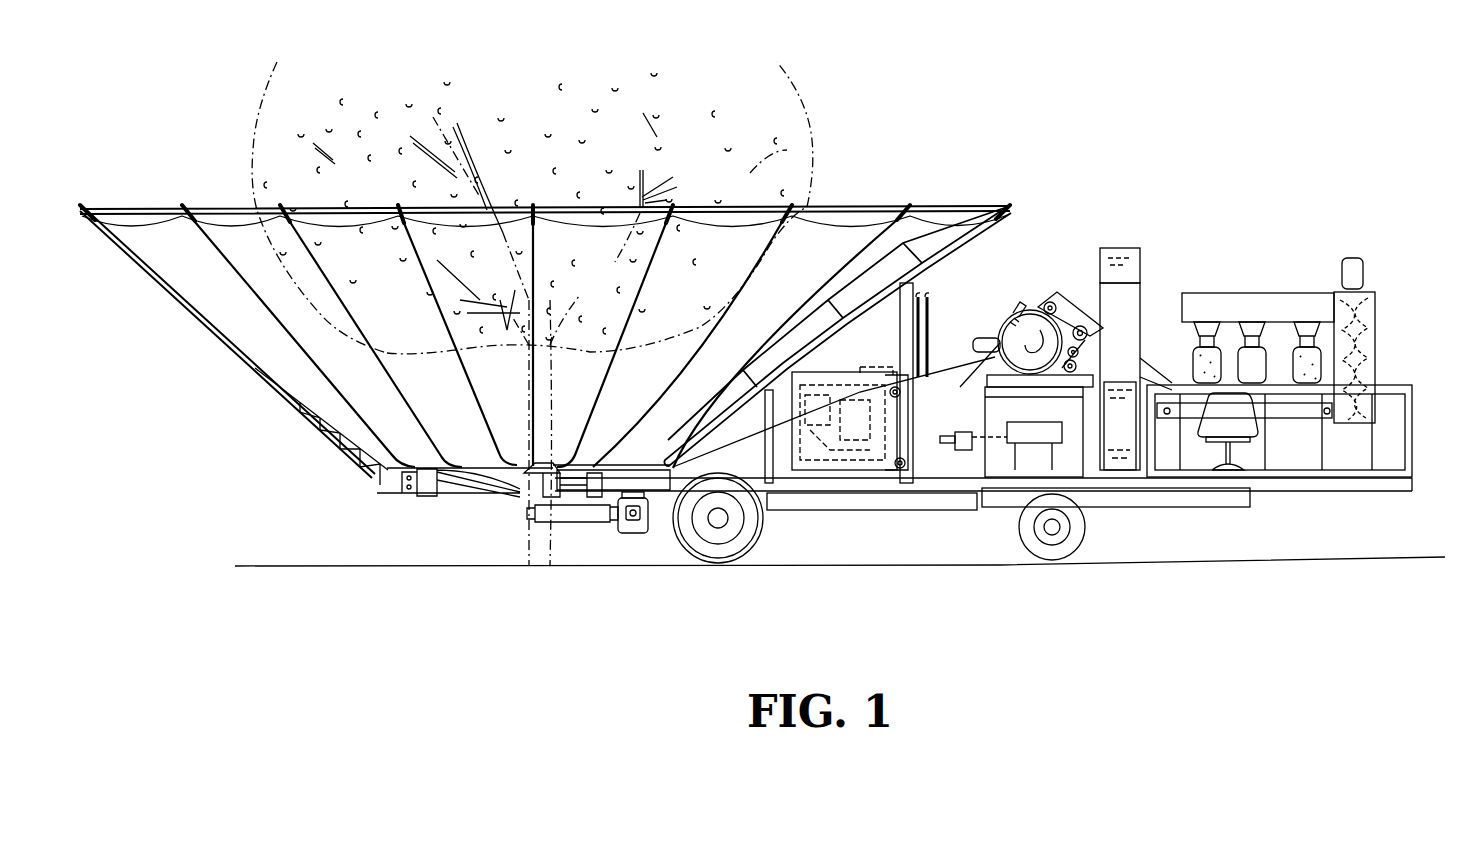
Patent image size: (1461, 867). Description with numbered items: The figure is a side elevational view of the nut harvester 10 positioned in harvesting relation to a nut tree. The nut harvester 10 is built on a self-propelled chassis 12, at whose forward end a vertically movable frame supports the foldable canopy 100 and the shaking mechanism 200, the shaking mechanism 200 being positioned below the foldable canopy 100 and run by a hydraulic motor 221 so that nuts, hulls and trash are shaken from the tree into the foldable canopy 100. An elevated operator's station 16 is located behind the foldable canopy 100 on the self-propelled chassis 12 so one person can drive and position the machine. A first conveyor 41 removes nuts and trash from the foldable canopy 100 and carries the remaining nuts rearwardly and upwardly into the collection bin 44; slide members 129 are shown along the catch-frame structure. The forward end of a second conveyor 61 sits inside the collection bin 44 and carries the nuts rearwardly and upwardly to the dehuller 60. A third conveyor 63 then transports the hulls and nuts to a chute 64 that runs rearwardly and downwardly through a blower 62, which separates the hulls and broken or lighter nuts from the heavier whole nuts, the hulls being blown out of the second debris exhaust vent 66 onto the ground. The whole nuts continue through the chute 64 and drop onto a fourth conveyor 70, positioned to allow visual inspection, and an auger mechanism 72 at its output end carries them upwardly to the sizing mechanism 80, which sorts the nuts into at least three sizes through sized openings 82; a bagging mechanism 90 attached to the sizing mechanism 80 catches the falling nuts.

The nut harvester 10 is at (968, 567).
The self-propelled chassis 12 is at (892, 521).
The elevated operator's station 16 is at (937, 317).
The first conveyor 41 is at (713, 455).
The collection bin 44 is at (873, 432).
The dehuller 60 is at (1038, 368).
The second conveyor 61 is at (971, 400).
The blower 62 is at (1120, 472).
The third conveyor 63 is at (1120, 376).
The chute 64 is at (1150, 363).
The second debris exhaust vent 66 is at (1157, 272).
The fourth conveyor 70 is at (1290, 394).
The auger mechanism 72 is at (1378, 332).
The sizing mechanism 80 is at (1272, 290).
The sized openings 82 is at (1258, 306).
The bagging mechanism 90 is at (1257, 365).
The foldable canopy 100 is at (890, 185).
The slide rails 129 is at (837, 323).
The shaking mechanism 200 is at (578, 527).
The hydraulic motor 221 is at (645, 537).